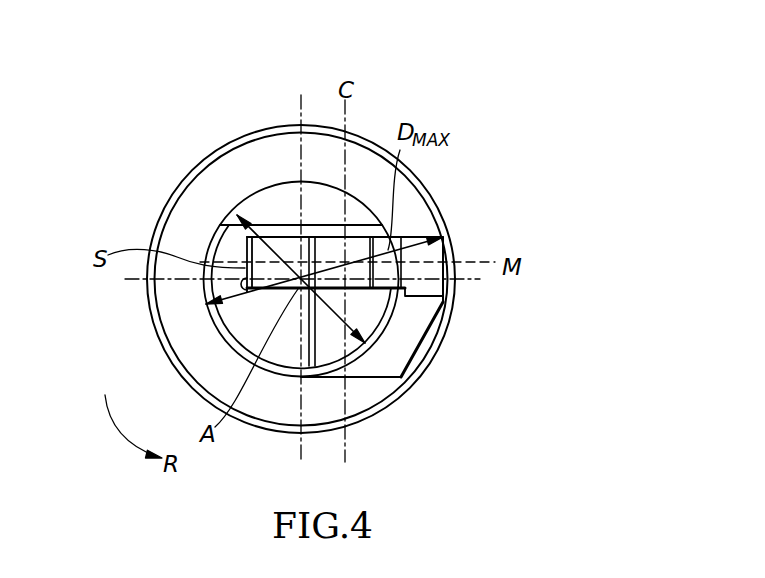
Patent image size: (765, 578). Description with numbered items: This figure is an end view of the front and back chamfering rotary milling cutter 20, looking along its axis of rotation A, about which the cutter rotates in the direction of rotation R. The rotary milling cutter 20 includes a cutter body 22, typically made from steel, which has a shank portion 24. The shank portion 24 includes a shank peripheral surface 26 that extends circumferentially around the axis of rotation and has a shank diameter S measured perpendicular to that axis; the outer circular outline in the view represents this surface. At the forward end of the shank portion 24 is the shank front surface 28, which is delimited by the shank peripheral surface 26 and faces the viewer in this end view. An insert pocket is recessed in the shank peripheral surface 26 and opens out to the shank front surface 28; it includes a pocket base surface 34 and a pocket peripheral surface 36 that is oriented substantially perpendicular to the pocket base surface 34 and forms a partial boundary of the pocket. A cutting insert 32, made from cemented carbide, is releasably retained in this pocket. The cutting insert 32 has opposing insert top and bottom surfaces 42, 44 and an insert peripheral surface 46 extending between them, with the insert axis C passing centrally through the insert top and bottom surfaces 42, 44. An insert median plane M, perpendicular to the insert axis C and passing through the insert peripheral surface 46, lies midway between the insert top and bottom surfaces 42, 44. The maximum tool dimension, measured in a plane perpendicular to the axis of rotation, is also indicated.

The rotary milling cutter 20 is at (540, 90).
The cutter body 22 is at (168, 148).
The shank portion 24 is at (188, 229).
The shank peripheral surface 26 is at (293, 258).
The shank front surface 28 is at (245, 315).
The cutting insert 32 is at (408, 197).
The pocket base surface 34 is at (422, 340).
The pocket peripheral surface 36 is at (262, 270).
The insert top surface 42 is at (428, 237).
The insert bottom surface 44 is at (405, 298).
The insert peripheral surface 46 is at (445, 239).